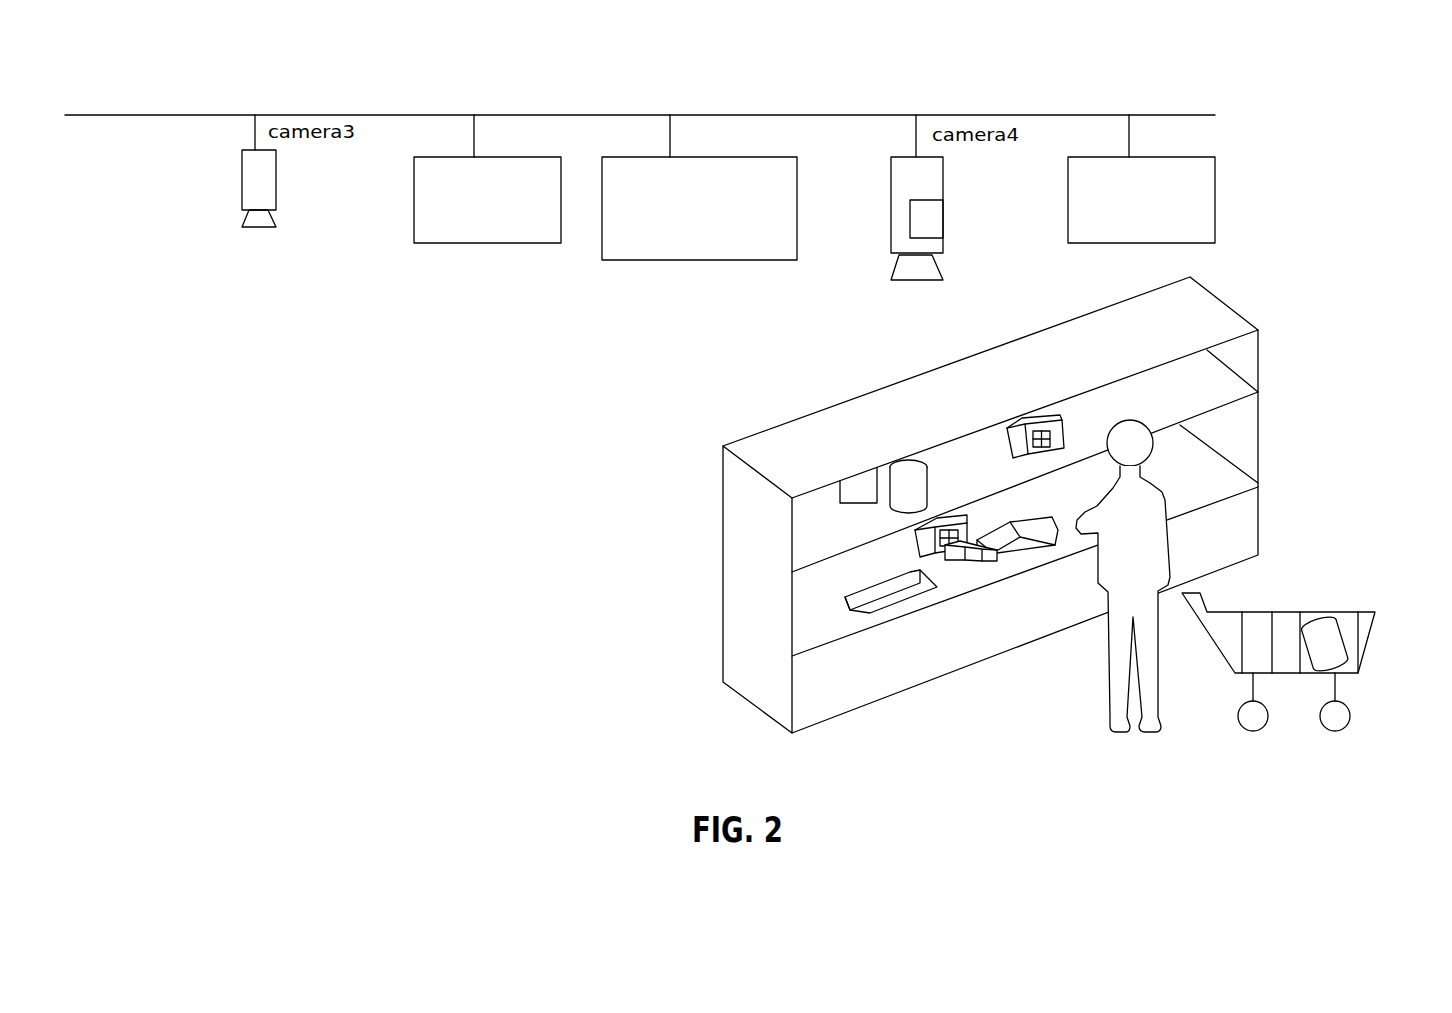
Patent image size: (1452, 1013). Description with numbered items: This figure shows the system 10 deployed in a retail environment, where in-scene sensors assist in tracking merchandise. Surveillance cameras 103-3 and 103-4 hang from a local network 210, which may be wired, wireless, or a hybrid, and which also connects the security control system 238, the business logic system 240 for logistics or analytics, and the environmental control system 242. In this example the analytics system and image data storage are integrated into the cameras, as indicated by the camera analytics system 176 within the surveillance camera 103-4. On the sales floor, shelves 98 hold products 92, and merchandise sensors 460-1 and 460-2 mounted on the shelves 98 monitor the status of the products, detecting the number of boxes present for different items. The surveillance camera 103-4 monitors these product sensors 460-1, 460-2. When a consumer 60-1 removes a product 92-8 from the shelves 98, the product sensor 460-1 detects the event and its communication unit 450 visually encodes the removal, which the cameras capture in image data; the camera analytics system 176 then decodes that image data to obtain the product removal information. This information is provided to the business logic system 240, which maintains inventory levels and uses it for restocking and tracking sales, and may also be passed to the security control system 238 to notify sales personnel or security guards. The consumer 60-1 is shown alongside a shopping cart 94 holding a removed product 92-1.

The system 10 is at (1305, 115).
The local network 210 is at (640, 115).
The surveillance camera 103-3 is at (242, 211).
The surveillance camera 103-4 is at (943, 191).
The camera analytics system 176 is at (932, 240).
The security control system 238 is at (472, 231).
The business logic system 240 is at (685, 250).
The environmental control system 242 is at (1126, 230).
The shelves 98 is at (1258, 358).
The products 92 is at (928, 485).
The communication unit 450 is at (1040, 432).
The product sensor 460-1 is at (917, 547).
The product sensor 460-2 is at (1064, 426).
The product 92-8 is at (1002, 560).
The consumer 60-1 is at (1107, 677).
The shopping cart 94 is at (1362, 660).
The product in cart 92-1 is at (1338, 612).